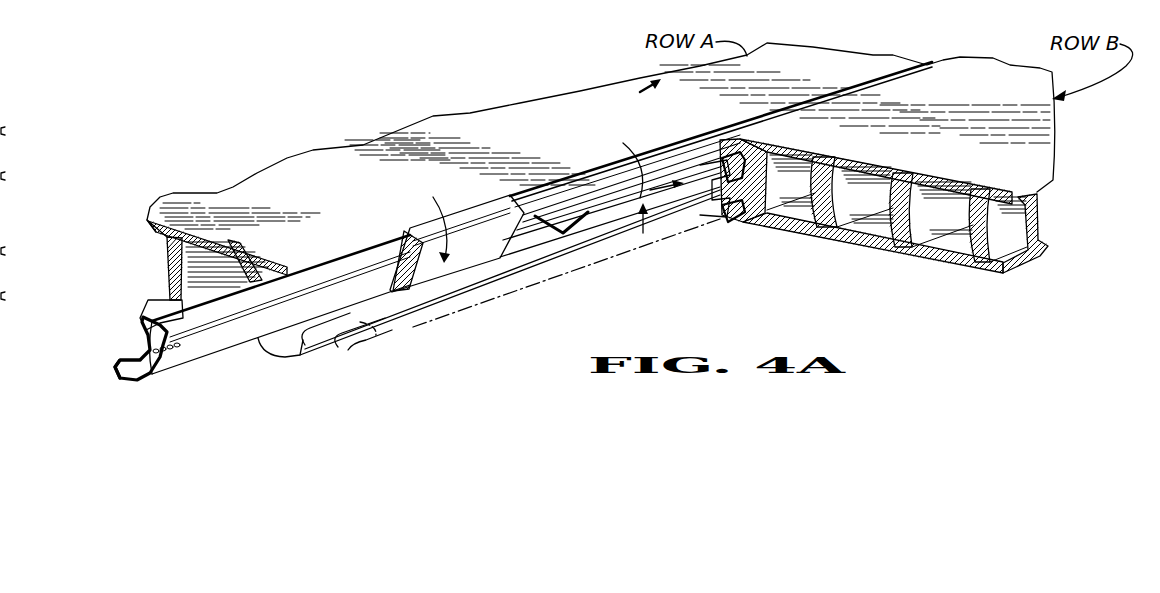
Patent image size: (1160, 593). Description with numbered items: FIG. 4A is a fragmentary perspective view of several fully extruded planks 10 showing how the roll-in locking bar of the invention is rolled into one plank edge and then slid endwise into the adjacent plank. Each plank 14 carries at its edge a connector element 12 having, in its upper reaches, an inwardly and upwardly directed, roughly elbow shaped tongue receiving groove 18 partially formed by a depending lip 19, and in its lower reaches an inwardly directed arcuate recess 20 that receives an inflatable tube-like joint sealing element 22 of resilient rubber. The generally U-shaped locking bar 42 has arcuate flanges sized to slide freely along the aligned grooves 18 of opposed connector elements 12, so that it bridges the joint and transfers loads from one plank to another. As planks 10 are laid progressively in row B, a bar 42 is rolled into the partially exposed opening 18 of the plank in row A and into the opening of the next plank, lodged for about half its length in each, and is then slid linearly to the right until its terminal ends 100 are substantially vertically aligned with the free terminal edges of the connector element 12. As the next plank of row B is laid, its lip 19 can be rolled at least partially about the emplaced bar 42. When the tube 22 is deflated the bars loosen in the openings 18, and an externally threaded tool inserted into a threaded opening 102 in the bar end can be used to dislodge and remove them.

The plank 10 is at (428, 96).
The connector element 12 is at (282, 368).
The plank 14 is at (540, 118).
The tongue receiving groove 18 is at (762, 142).
The depending lip 19 is at (720, 153).
The arcuate recess 20 is at (312, 338).
The joint sealing element 22 is at (456, 303).
The locking bar 42 is at (710, 215).
The terminal end 100 is at (143, 330).
The threaded opening 102 is at (137, 352).